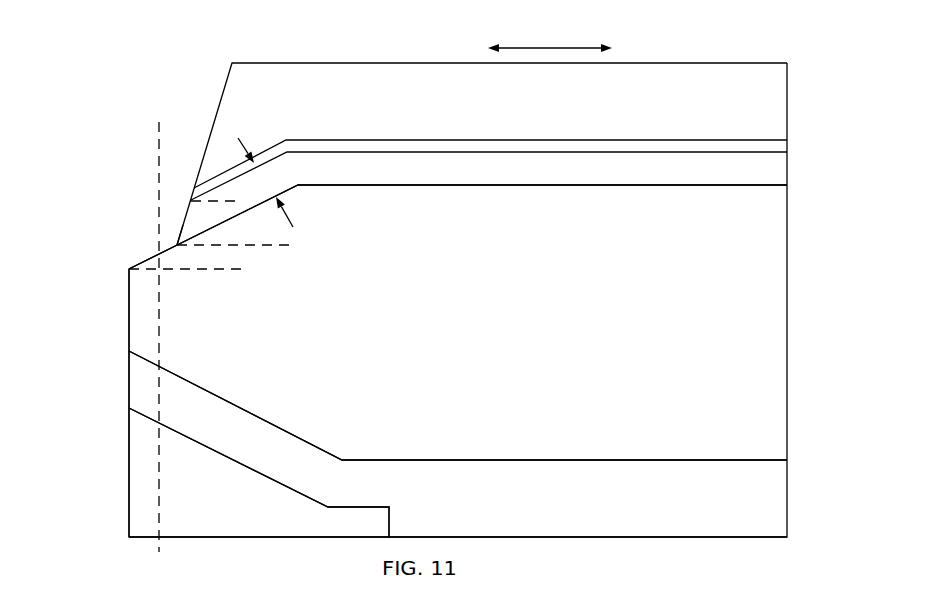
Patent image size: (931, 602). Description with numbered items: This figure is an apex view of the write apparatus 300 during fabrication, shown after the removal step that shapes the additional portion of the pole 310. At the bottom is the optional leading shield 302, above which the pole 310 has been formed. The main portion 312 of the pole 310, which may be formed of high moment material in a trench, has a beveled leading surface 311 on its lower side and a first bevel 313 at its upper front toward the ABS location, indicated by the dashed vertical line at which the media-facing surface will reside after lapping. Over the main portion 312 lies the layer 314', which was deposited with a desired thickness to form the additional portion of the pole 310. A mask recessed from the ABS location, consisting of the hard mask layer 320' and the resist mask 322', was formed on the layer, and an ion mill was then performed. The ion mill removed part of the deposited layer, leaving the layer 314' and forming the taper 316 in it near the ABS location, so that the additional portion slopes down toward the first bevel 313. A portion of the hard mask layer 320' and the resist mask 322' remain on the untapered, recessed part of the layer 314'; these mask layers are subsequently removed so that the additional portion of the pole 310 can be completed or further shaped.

The write apparatus 300 is at (440, 44).
The leading shield 302 is at (458, 472).
The pole 310 is at (117, 292).
The beveled leading surface 311 is at (146, 376).
The main portion 312 is at (458, 363).
The first bevel 313 is at (168, 267).
The layer 314' is at (482, 191).
The taper 316 is at (172, 223).
The hard mask layer 320' is at (467, 142).
The resist mask 322' is at (482, 154).